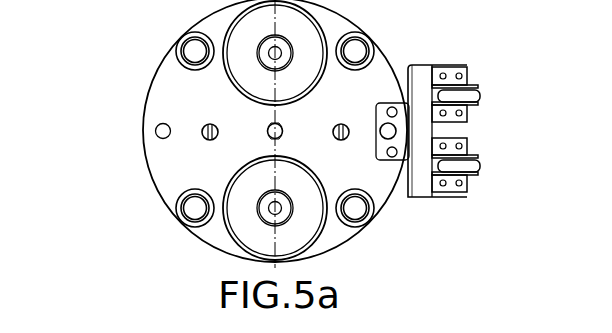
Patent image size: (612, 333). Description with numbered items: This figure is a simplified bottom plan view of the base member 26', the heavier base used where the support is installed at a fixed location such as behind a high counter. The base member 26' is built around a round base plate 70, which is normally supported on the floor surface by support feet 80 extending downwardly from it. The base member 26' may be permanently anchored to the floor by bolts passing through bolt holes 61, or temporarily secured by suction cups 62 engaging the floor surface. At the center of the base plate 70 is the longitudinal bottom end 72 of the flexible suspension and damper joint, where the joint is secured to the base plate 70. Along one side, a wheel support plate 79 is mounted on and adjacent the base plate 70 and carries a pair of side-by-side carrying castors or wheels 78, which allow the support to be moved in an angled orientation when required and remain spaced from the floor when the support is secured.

The base plate 70 is at (143, 108).
The base member 26' is at (91, 162).
The suction cups 62 is at (312, 33).
The support feet 80 is at (185, 53).
The longitudinal bottom end 72 is at (268, 127).
The bolt holes 61 is at (381, 131).
The wheel support plate 79 is at (420, 68).
The carrying castors or wheels 78 is at (481, 167).